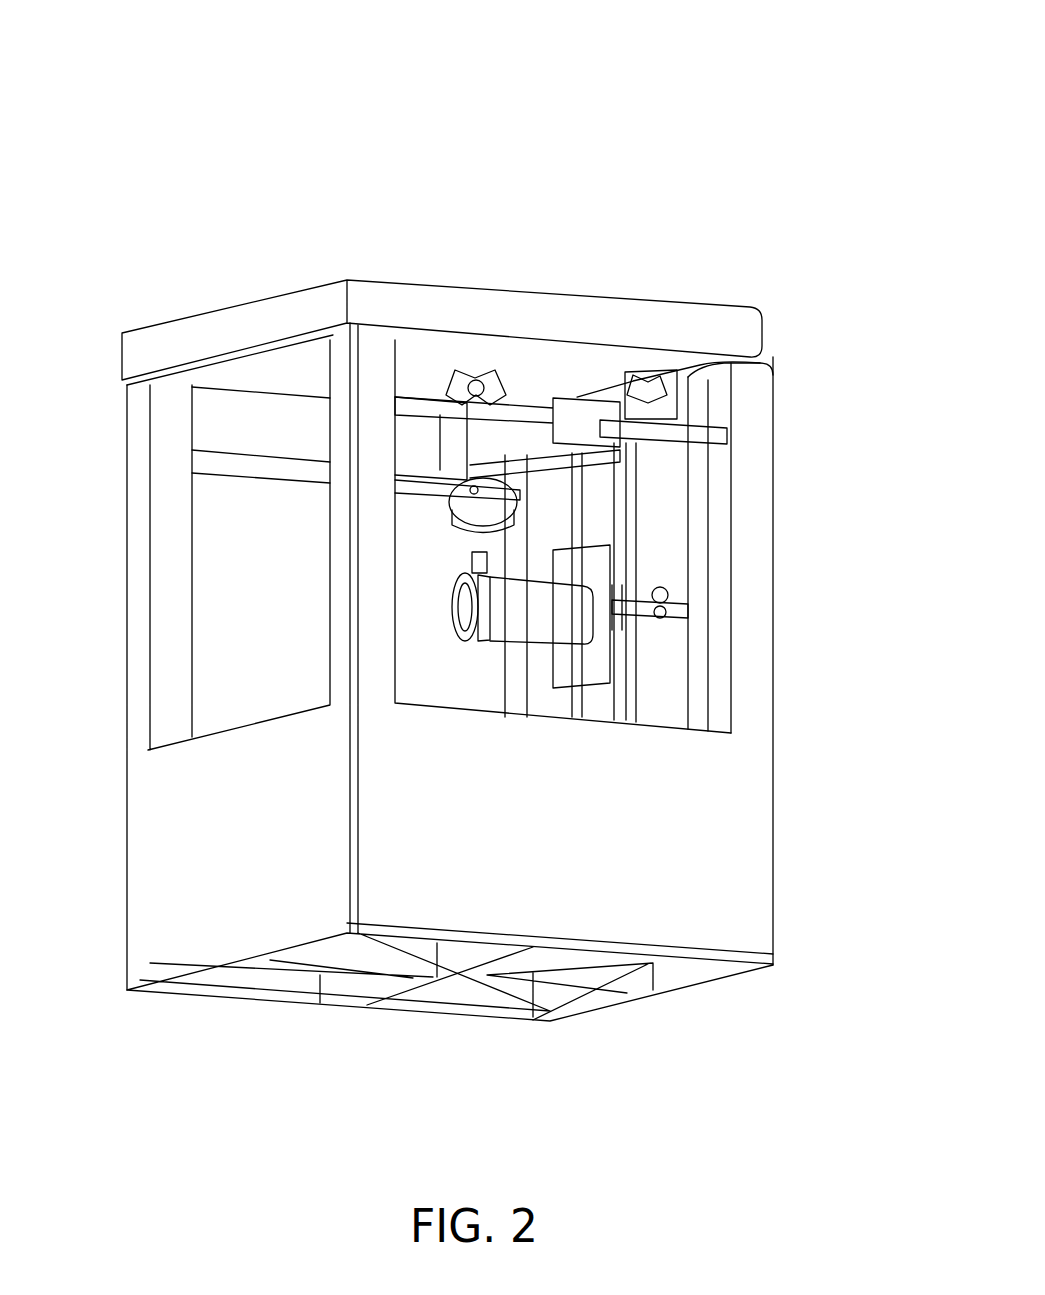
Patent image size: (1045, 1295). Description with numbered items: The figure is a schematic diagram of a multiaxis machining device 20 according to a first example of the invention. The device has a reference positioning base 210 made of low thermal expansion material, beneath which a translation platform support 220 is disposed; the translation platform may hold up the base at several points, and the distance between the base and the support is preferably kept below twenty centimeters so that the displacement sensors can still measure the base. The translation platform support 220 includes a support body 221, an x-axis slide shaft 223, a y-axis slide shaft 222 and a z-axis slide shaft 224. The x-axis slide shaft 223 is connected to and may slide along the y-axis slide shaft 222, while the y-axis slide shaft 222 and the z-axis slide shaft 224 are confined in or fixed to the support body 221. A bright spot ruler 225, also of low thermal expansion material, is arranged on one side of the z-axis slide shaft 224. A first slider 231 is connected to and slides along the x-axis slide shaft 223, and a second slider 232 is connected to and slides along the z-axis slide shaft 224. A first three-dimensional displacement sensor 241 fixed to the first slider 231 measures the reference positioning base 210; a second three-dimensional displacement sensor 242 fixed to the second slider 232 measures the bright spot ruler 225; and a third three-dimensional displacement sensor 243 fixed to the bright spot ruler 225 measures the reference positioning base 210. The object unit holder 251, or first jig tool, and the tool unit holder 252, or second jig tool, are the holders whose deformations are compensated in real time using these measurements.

The multiaxis machining device 20 is at (142, 86).
The reference positioning base 210 is at (741, 335).
The translation platform support 220 is at (878, 11).
The support body 221 is at (719, 872).
The y-axis slide shaft 222 is at (709, 433).
The x-axis slide shaft 223 is at (569, 376).
The z-axis slide shaft 224 is at (614, 515).
The bright spot ruler 225 is at (676, 670).
The first slider 231 is at (425, 429).
The second slider 232 is at (598, 671).
The first three-dimensional displacement sensor 241 is at (486, 349).
The second three-dimensional displacement sensor 242 is at (714, 613).
The third three-dimensional displacement sensor 243 is at (687, 388).
The object unit holder 251 is at (456, 502).
The tool unit holder 252 is at (456, 612).